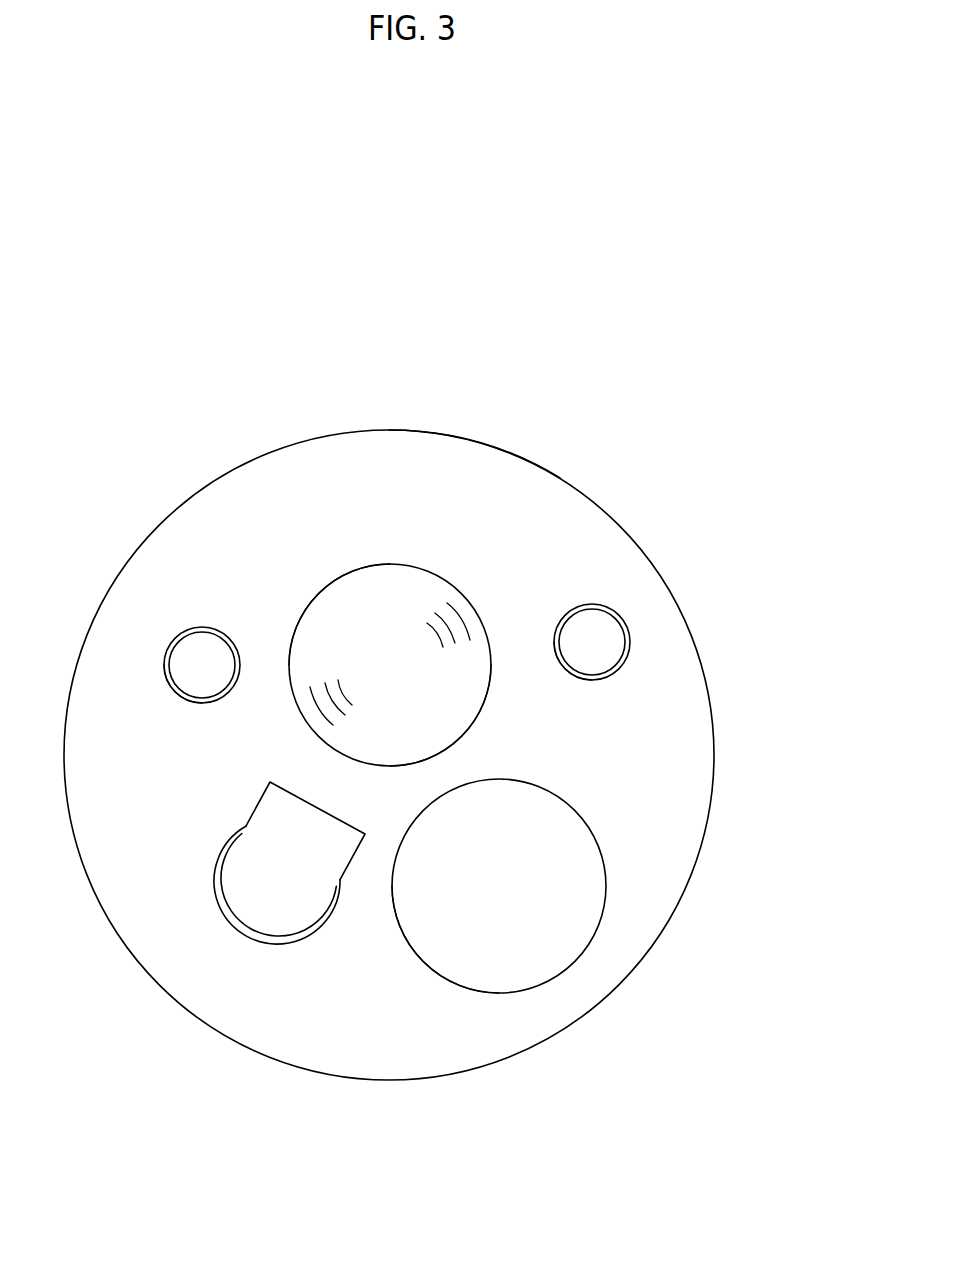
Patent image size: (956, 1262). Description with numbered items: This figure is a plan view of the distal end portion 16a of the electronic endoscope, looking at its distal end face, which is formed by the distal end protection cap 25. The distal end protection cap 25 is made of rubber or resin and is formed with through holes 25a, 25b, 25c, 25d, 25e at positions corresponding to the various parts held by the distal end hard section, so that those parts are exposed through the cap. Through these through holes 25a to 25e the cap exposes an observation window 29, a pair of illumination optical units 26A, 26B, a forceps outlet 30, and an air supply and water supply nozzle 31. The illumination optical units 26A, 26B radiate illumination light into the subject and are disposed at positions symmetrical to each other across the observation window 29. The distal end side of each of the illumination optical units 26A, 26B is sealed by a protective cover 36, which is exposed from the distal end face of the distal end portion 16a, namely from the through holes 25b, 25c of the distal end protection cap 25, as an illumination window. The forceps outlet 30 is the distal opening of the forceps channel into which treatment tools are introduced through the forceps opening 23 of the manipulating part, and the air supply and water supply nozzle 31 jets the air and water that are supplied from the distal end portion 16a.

The distal end portion 16a is at (471, 434).
The forceps opening 23 is at (387, 565).
The distal end protection cap 25 is at (680, 777).
The through hole 25a is at (456, 733).
The through hole 25b is at (183, 693).
The through hole 25c is at (574, 669).
The through hole 25d is at (440, 973).
The through hole 25e is at (268, 943).
The illumination optical unit 26A is at (172, 632).
The illumination optical unit 26B is at (618, 604).
The observation window 29 is at (378, 632).
The forceps outlet 30 is at (557, 918).
The air supply and water supply nozzle 31 is at (290, 845).
The protective cover 36 is at (213, 660).